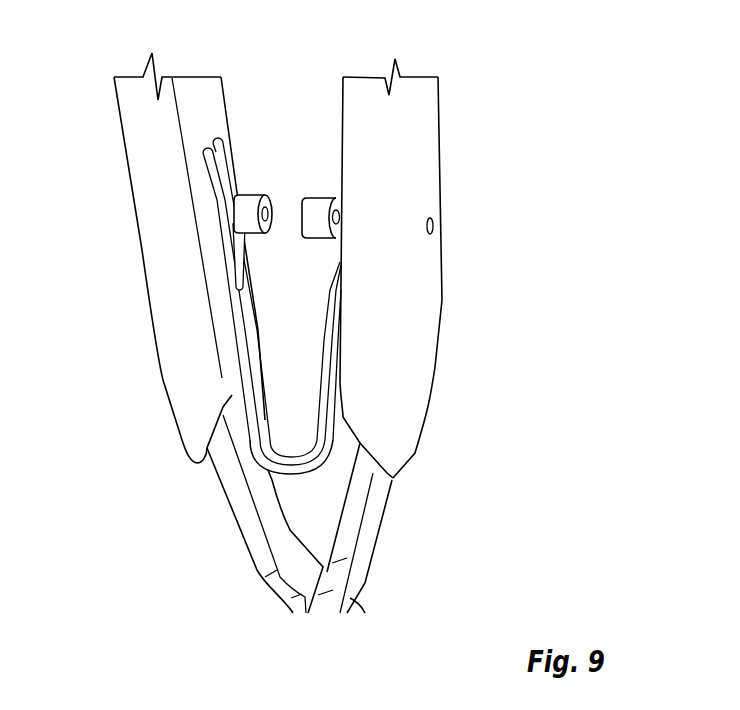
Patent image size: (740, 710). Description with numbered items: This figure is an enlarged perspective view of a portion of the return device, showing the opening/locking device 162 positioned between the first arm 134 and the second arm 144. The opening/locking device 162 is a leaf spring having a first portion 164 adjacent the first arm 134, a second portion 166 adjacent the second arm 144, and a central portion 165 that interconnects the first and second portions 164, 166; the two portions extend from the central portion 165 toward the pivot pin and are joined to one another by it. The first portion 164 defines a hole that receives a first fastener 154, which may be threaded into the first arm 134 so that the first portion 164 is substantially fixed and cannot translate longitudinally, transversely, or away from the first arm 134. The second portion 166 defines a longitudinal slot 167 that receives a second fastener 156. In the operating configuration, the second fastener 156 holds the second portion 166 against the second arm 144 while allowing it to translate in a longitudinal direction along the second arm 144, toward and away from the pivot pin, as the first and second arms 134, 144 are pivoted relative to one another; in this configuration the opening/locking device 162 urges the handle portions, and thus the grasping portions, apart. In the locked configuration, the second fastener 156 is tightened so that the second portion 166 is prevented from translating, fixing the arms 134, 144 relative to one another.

The second arm 144 is at (120, 135).
The first arm 134 is at (440, 153).
The longitudinal slot 167 is at (225, 198).
The first fastener 154 is at (318, 217).
The second fastener 156 is at (240, 248).
The second portion 166 is at (245, 375).
The first portion 164 is at (335, 365).
The central portion 165 is at (268, 480).
The opening/locking device 162 is at (324, 472).